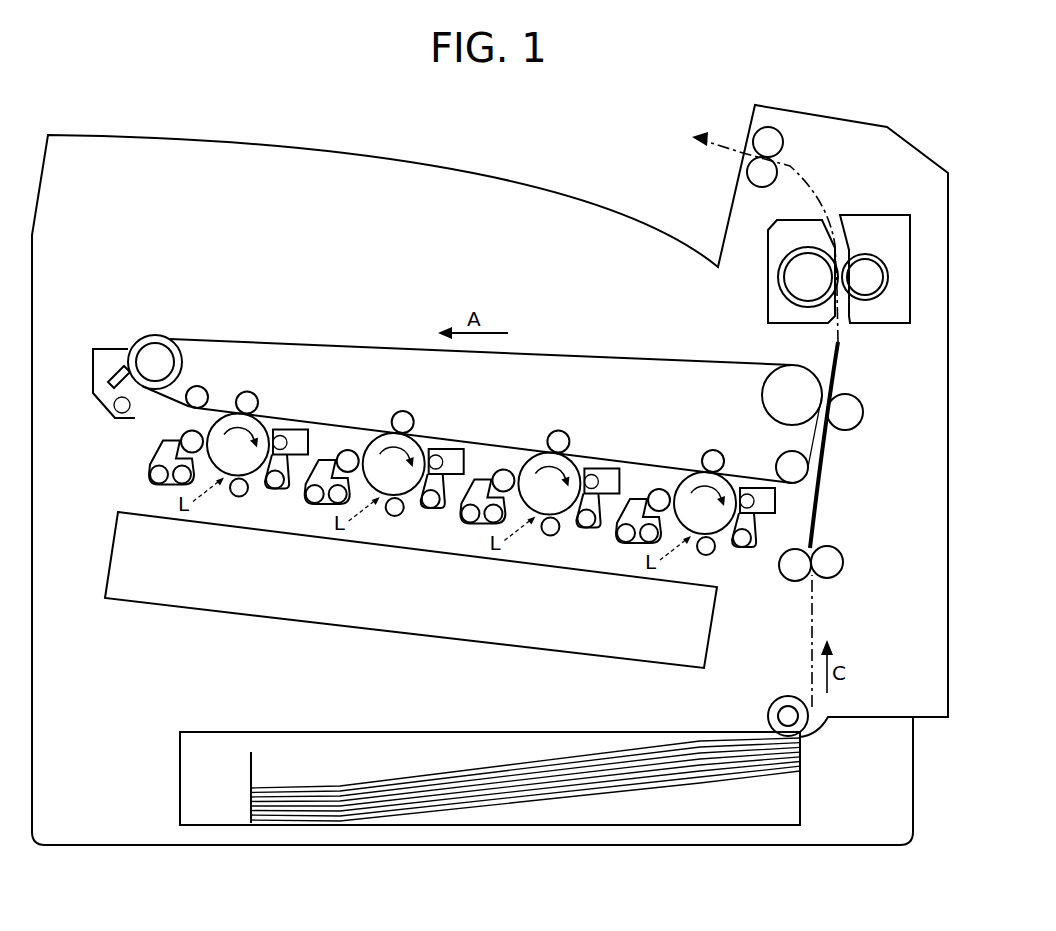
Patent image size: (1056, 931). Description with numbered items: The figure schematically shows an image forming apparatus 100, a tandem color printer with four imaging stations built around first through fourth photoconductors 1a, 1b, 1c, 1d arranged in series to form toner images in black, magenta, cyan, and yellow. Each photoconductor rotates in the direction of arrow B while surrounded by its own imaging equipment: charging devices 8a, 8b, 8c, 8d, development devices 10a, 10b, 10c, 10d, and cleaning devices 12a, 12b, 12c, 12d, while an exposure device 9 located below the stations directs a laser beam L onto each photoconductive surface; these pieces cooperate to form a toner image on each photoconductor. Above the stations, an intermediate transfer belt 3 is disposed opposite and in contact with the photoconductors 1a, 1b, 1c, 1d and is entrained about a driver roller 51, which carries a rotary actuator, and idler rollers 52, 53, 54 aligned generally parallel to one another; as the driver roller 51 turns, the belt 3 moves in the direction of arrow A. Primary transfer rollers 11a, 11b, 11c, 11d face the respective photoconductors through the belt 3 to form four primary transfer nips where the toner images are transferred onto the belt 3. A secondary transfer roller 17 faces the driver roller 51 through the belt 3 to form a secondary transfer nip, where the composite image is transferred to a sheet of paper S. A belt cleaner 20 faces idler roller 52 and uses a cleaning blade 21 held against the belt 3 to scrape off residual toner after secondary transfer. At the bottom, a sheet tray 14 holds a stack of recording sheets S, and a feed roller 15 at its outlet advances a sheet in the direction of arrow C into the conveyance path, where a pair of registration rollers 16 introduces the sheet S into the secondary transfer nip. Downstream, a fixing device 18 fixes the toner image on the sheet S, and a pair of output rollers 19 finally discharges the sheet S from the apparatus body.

The image forming apparatus 100 is at (1010, 116).
The photoconductor 1a is at (705, 481).
The photoconductor 1b is at (549, 462).
The photoconductor 1c is at (394, 442).
The photoconductor 1d is at (264, 432).
The intermediate transfer belt 3 is at (597, 352).
The charging device 8a is at (698, 581).
The charging device 8b is at (543, 563).
The charging device 8c is at (388, 542).
The charging device 8d is at (233, 523).
The exposure device 9 is at (110, 556).
The development device 10a is at (638, 556).
The development device 10b is at (482, 535).
The development device 10c is at (327, 515).
The development device 10d is at (171, 499).
The primary transfer roller 11a is at (735, 443).
The primary transfer roller 11b is at (580, 424).
The primary transfer roller 11c is at (423, 402).
The primary transfer roller 11d is at (268, 387).
The cleaning device 12a is at (742, 569).
The cleaning device 12b is at (584, 551).
The cleaning device 12c is at (426, 530).
The cleaning device 12d is at (271, 511).
The sheet tray 14 is at (620, 826).
The feed roller 15 is at (770, 702).
The registration roller 16 is at (810, 581).
The secondary transfer roller 17 is at (865, 414).
The fixing device 18 is at (870, 214).
The output rollers 19 is at (778, 175).
The belt cleaner 20 is at (93, 370).
The cleaning blade 21 is at (114, 375).
The driver roller 51 is at (762, 386).
The idler roller 52 is at (155, 356).
The idler roller 53 is at (200, 386).
The idler roller 54 is at (806, 478).
The sheet of paper S is at (841, 378).